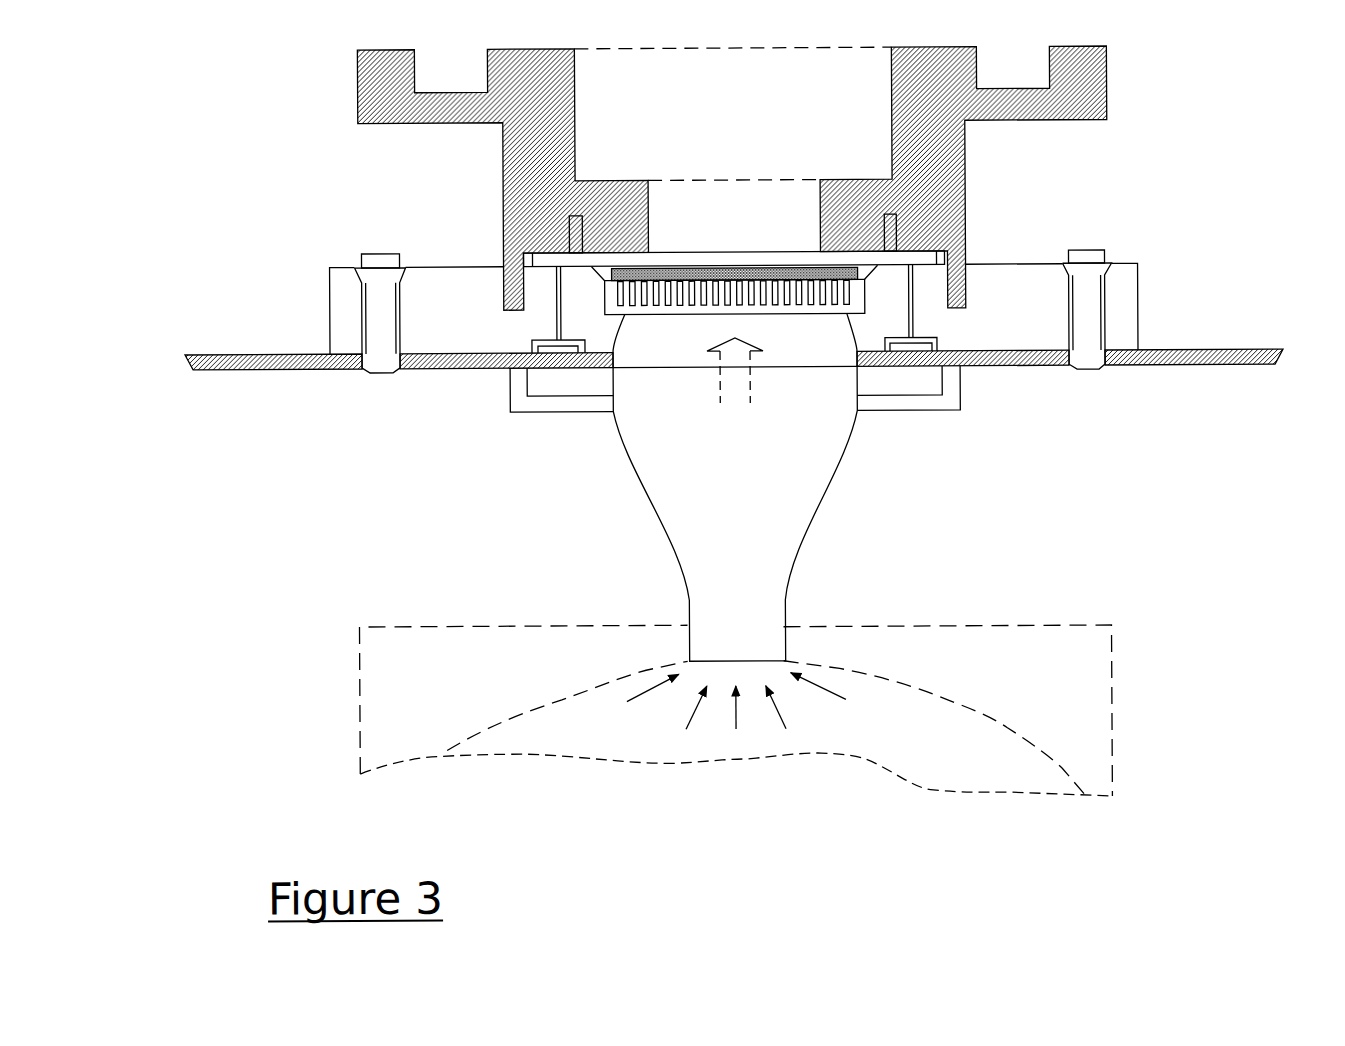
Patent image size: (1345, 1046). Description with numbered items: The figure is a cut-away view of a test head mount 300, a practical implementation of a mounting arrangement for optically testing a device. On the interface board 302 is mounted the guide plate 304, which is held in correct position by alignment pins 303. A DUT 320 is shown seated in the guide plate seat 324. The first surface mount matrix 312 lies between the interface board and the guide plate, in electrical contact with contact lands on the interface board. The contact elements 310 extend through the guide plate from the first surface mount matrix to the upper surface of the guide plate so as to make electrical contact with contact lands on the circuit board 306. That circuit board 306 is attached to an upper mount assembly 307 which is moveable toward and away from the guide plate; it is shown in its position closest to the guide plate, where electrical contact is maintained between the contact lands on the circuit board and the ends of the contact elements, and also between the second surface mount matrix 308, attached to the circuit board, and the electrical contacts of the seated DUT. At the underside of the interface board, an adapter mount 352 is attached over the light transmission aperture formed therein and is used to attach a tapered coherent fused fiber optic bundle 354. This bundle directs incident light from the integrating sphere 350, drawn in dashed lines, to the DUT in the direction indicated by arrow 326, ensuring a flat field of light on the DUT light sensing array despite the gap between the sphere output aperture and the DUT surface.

The test head mount 300 is at (1213, 121).
The interface board 302 is at (1243, 364).
The alignment pins 303 is at (1093, 306).
The guide plate 304 is at (1035, 279).
The circuit board 306 is at (792, 252).
The upper mount assembly 307 is at (953, 180).
The second surface mount matrix 308 is at (688, 280).
The contact elements 310 is at (912, 323).
The first surface mount matrix 312 is at (908, 353).
The DUT 320 is at (793, 314).
The guide plate seat 324 is at (604, 317).
The arrow 326 is at (721, 385).
The integrating sphere 350 is at (735, 711).
The adapter mount 352 is at (957, 404).
The tapered coherent fused fiber optic bundle 354 is at (793, 523).